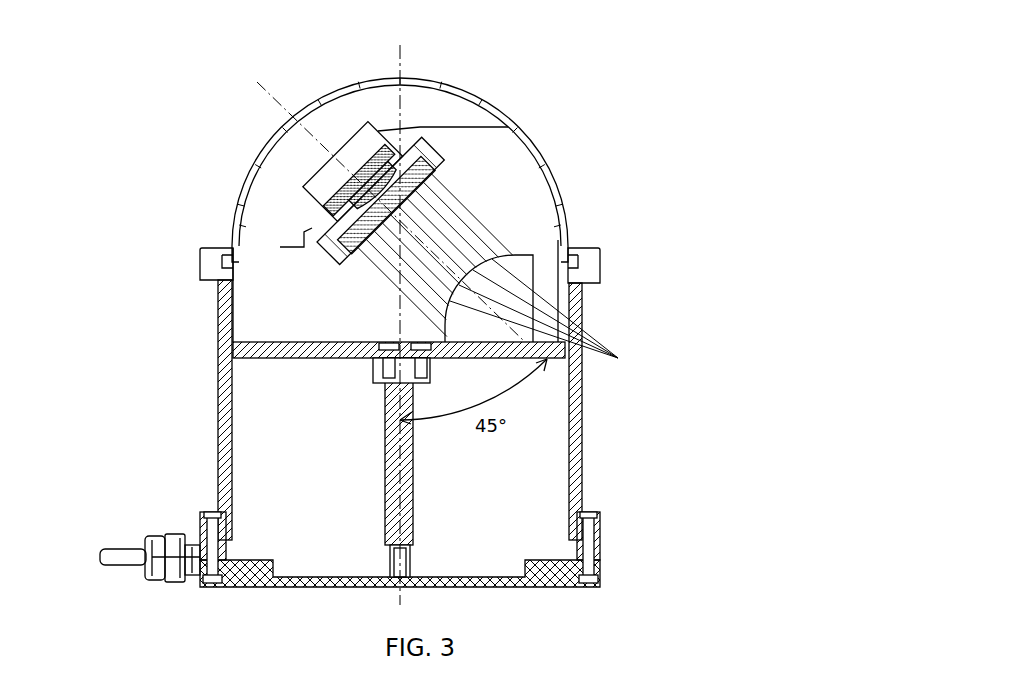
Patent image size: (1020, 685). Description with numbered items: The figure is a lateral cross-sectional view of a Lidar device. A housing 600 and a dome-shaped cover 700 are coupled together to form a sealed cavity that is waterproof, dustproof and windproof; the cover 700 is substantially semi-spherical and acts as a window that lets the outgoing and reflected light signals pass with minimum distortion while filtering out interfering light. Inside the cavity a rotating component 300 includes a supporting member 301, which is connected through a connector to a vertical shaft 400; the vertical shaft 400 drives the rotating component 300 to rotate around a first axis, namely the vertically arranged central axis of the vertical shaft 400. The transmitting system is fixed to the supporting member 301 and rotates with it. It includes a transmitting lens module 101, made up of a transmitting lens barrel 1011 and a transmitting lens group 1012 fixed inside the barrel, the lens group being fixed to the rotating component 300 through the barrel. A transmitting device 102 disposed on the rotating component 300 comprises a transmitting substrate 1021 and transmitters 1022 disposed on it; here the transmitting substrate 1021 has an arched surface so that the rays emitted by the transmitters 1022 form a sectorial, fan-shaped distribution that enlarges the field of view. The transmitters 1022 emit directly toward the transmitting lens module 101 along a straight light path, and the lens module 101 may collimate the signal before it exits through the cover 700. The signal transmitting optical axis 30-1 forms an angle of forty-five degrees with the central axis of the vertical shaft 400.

The transmitting lens module 101 is at (308, 168).
The transmitting lens barrel 1011 is at (365, 126).
The transmitting lens group 1012 is at (353, 170).
The signal transmitting optical axis 30-1 is at (280, 103).
The transmitting device 102 is at (610, 310).
The transmitting substrate 1021 is at (523, 278).
The transmitters 1022 is at (618, 358).
The rotating component 300 is at (270, 253).
The supporting member 301 is at (282, 345).
The vertical shaft 400 is at (400, 432).
The housing 600 is at (575, 427).
The cover 700 is at (552, 172).